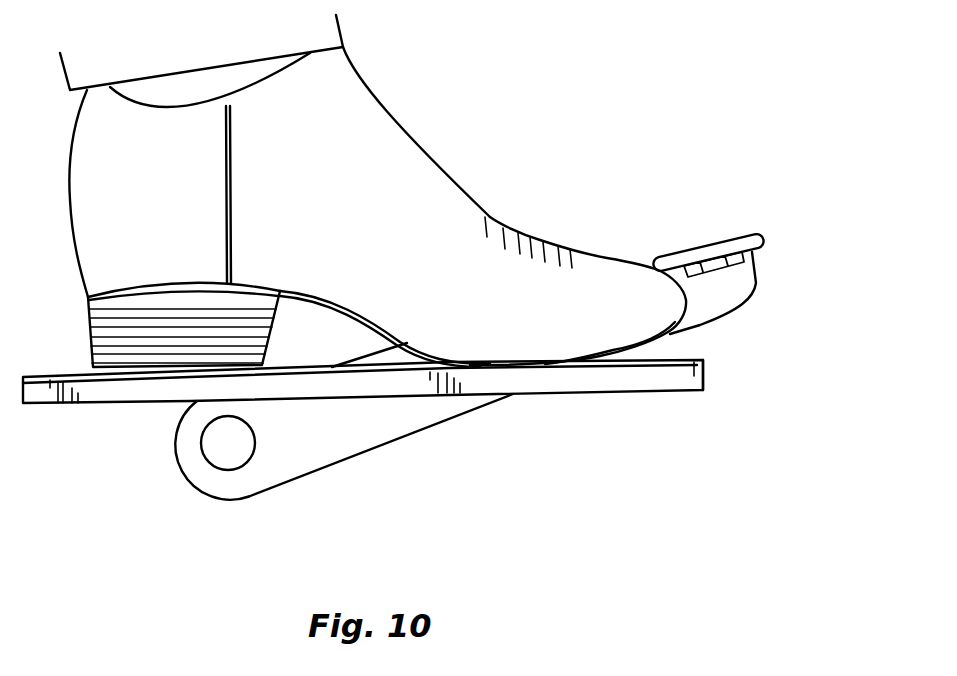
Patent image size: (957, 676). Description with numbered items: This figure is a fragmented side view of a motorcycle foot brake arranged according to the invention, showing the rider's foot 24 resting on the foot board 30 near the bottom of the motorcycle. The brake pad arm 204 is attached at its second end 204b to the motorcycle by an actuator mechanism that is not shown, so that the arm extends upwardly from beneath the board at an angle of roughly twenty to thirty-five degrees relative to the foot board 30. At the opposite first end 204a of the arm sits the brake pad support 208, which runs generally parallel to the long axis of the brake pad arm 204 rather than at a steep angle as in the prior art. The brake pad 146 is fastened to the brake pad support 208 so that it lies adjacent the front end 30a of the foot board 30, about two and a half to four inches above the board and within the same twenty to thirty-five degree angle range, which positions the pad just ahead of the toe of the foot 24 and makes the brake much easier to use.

The foot 24 is at (347, 220).
The foot board 30 is at (35, 397).
The front end of the foot board 30a is at (696, 376).
The brake pad 146 is at (725, 245).
The brake pad arm 204 is at (425, 413).
The first end of the brake pad arm 204a is at (740, 285).
The second end of the brake pad arm 204b is at (236, 450).
The brake pad support 208 is at (682, 250).